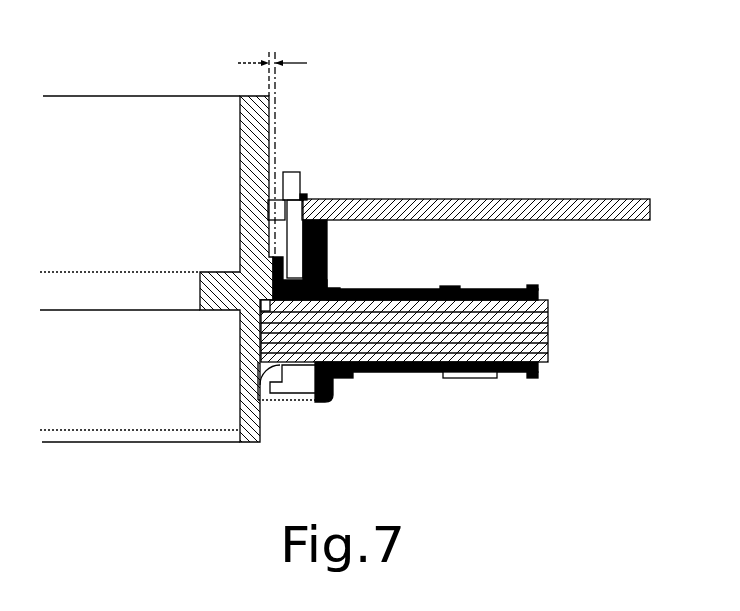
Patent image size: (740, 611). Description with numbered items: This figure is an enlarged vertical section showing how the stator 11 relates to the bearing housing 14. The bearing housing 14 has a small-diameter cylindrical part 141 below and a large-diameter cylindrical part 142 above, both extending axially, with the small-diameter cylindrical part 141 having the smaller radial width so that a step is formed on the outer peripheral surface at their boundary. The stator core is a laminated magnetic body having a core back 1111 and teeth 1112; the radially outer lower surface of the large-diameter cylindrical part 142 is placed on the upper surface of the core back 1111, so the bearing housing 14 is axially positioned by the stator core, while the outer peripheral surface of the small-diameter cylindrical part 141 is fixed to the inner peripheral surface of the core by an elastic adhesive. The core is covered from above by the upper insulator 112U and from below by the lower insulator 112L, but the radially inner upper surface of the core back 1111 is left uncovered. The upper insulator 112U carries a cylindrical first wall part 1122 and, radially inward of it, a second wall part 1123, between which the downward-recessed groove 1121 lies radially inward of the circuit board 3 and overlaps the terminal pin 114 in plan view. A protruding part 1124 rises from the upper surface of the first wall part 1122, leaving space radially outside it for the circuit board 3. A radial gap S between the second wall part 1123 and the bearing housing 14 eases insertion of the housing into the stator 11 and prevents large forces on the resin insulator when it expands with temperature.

The bearing housing 14 is at (172, 108).
The large-diameter cylindrical part 142 is at (240, 175).
The small-diameter cylindrical part 141 is at (240, 350).
The second wall part 1123 is at (266, 258).
The gap S is at (272, 143).
The circuit board 3 is at (526, 212).
The terminal pin 114 is at (289, 172).
The protruding part 1124 is at (304, 197).
The first wall part 1122 is at (328, 248).
The groove 1121 is at (306, 272).
The upper insulator 112U is at (407, 289).
The teeth 1112 is at (548, 333).
The lower insulator 112L is at (380, 378).
The core back 1111 is at (292, 340).
The stator 11 is at (469, 363).